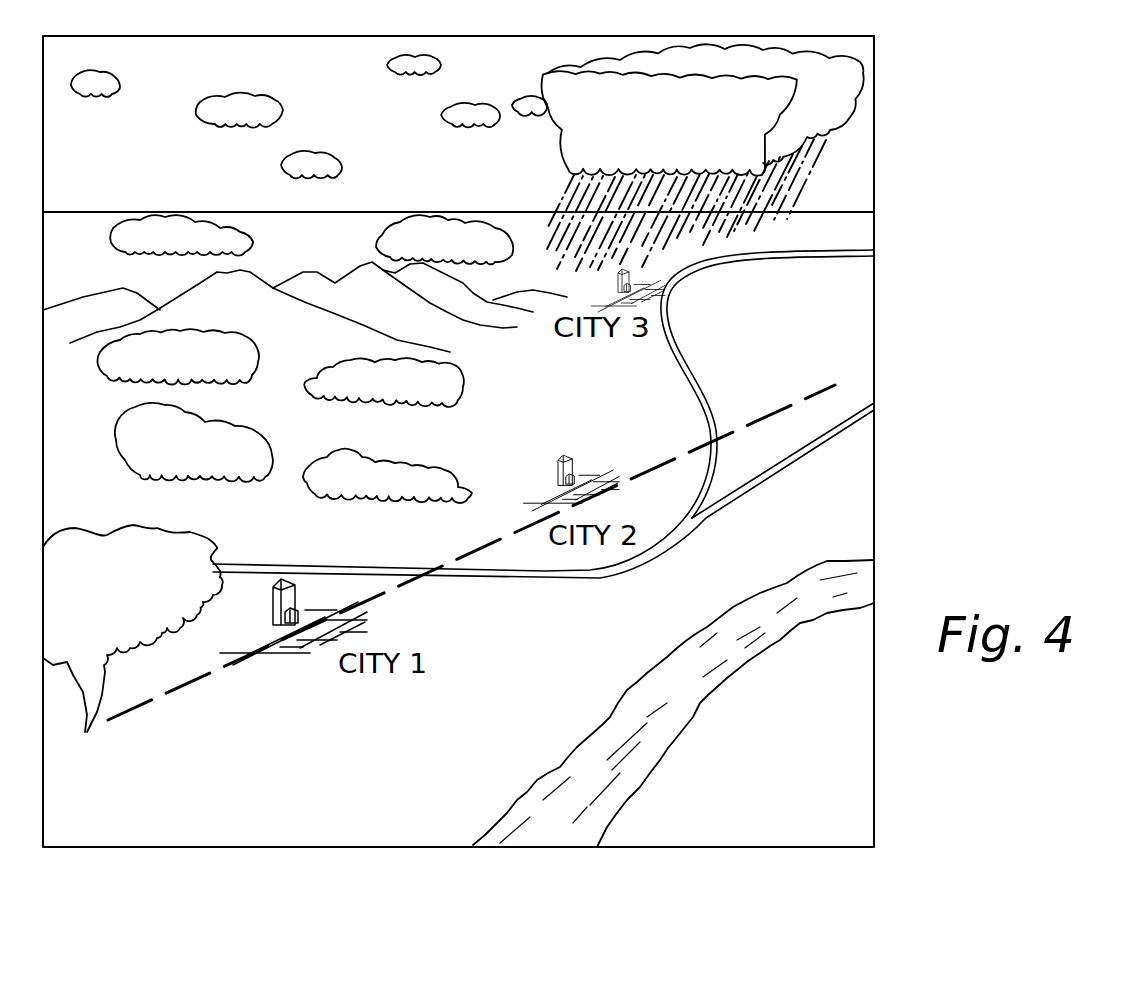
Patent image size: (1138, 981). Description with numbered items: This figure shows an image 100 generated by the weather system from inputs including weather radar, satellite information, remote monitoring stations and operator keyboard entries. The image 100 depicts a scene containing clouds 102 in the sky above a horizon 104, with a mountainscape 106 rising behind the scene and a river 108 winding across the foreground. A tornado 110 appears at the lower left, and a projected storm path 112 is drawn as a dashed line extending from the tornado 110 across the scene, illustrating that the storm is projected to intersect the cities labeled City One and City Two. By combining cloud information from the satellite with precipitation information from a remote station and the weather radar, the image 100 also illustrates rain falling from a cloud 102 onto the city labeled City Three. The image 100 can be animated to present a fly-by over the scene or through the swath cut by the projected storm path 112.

The image 100 is at (913, 324).
The clouds 102 is at (563, 138).
The horizon 104 is at (160, 212).
The mountainscape 106 is at (362, 278).
The river 108 is at (626, 742).
The tornado 110 is at (88, 675).
The projected storm path 112 is at (128, 713).